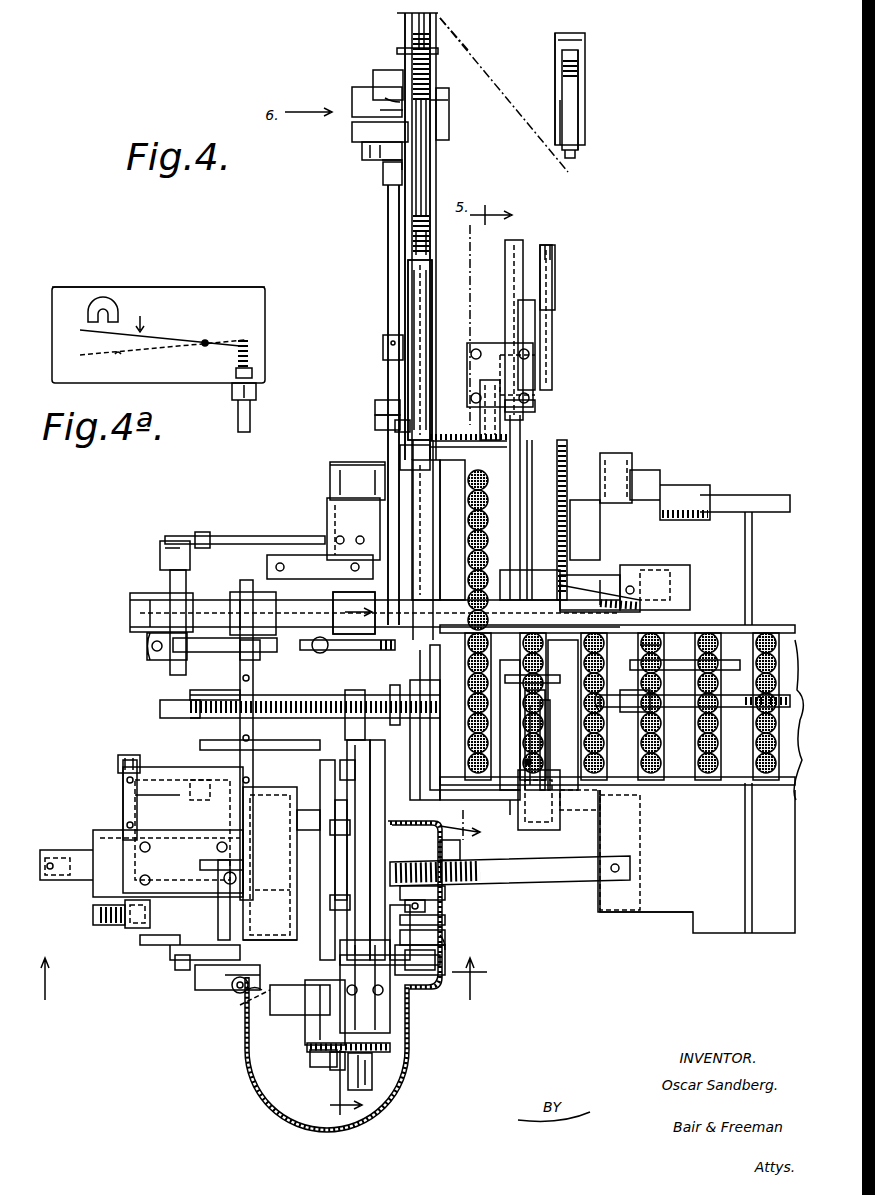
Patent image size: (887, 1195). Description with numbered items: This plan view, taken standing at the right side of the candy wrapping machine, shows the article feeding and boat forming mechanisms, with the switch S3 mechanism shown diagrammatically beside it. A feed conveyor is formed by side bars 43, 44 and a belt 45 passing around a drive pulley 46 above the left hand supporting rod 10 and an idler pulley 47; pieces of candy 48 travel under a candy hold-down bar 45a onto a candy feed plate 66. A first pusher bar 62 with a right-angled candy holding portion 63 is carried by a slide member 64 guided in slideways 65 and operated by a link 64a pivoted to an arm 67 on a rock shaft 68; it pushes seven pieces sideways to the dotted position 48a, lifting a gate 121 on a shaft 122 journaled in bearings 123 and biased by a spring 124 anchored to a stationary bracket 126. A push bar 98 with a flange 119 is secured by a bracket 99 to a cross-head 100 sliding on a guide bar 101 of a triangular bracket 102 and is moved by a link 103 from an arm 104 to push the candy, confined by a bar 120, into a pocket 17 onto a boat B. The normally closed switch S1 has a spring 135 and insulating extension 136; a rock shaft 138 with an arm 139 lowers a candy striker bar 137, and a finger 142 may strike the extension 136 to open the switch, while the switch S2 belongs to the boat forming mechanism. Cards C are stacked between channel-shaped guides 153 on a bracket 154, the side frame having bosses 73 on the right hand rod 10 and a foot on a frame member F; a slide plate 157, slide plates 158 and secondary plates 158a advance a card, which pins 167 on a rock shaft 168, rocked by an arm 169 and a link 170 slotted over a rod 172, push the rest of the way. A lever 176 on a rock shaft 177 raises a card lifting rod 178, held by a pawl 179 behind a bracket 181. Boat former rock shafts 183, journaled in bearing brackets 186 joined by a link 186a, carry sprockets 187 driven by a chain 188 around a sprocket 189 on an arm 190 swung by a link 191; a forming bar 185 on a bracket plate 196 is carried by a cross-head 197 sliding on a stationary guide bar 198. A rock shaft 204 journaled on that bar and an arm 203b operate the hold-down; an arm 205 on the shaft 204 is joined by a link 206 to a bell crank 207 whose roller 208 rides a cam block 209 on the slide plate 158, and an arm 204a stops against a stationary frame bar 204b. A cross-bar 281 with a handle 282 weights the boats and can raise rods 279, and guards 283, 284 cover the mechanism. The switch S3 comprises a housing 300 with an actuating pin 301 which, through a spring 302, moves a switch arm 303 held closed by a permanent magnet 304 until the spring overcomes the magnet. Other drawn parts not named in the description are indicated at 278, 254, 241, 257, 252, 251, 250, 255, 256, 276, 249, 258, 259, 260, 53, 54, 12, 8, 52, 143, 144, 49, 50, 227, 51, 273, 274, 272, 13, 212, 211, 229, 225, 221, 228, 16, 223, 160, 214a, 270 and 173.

In FIG. 4, the switch S3 is at (410, 60).
In FIG. 4A, the switch S3 is at (227, 290).
In FIG. 4, the actuating pin 301 is at (455, 48).
In FIG. 4A, the actuating pin 301 is at (255, 418).
In FIG. 4, the block 278 is at (385, 72).
In FIG. 4, the bracket 254 is at (388, 100).
In FIG. 4, the bell crank 207 is at (352, 100).
In FIG. 4, the rod 241 is at (385, 112).
In FIG. 4, the block 257 is at (404, 132).
In FIG. 4, the nut 252 is at (362, 152).
In FIG. 4, the collar 251 is at (382, 168).
In FIG. 4, the coupling 250 is at (382, 184).
In FIG. 4, the side bar 43 is at (392, 206).
In FIG. 4, the guide 255 is at (440, 95).
In FIG. 4, the sleeve 256 is at (430, 110).
In FIG. 4, the spring 276 is at (430, 158).
In FIG. 4, the side bar 44 is at (436, 185).
In FIG. 4, the belt 45 is at (440, 195).
In FIG. 4, the idler pulley 47 is at (575, 66).
In FIG. 4, the pieces of candy 48 is at (432, 240).
In FIG. 4, the rod 249 is at (390, 287).
In FIG. 4, the candy hold-down bar 45a is at (415, 340).
In FIG. 4, the clamp 258 is at (384, 352).
In FIG. 4, the arm 104 is at (545, 250).
In FIG. 4, the triangular shaped bracket 102 is at (510, 287).
In FIG. 4, the cross-head 100 is at (535, 310).
In FIG. 4, the link 103 is at (552, 330).
In FIG. 4, the push bar 98 is at (488, 343).
In FIG. 4, the spring 124 is at (470, 395).
In FIG. 4, the stationary bracket 126 is at (472, 410).
In FIG. 4, the clamp 259 is at (385, 394).
In FIG. 4, the clamp 260 is at (385, 409).
In FIG. 4, the bearings 123 is at (400, 425).
In FIG. 4, the candy holding portion 63 is at (435, 437).
In FIG. 4, the bracket 99 is at (535, 408).
In FIG. 4, the guide bar 101 is at (525, 420).
In FIG. 4, the flange 119 is at (505, 445).
In FIG. 4, the block 53 is at (600, 455).
In FIG. 4, the shaft 54 is at (605, 452).
In FIG. 4, the candy feed plate 66 is at (395, 500).
In FIG. 4, the slideways 65 is at (370, 478).
In FIG. 4, the shaft 122 is at (405, 478).
In FIG. 4, the dotted-line candy position 48a is at (565, 465).
In FIG. 4, the bar 120 is at (505, 500).
In FIG. 4, the gate 121 is at (495, 518).
In FIG. 4, the first pusher bar 62 is at (428, 490).
In FIG. 4, the link 64a is at (255, 538).
In FIG. 4, the slide member 64 is at (330, 516).
In FIG. 4, the arm 67 is at (168, 554).
In FIG. 4, the section line 12 is at (250, 590).
In FIG. 4, the switch S2 is at (262, 600).
In FIG. 4, the section line 8 is at (340, 590).
In FIG. 4, the block 52 is at (565, 550).
In FIG. 4, the plate 143 is at (595, 575).
In FIG. 4, the frame members F is at (616, 543).
In FIG. 4, the supporting rod 10 is at (588, 580).
In FIG. 4, the rock shaft 138 is at (630, 570).
In FIG. 4, the slide 144 is at (520, 575).
In FIG. 4, the arm 49 is at (580, 585).
In FIG. 4, the guide 50 is at (458, 600).
In FIG. 4, the arm 227 is at (240, 648).
In FIG. 4, the drive pulley 46 is at (418, 640).
In FIG. 4, the rods 279 is at (420, 655).
In FIG. 4, the boat B is at (465, 650).
In FIG. 4, the candy striker bar 137 is at (518, 680).
In FIG. 4, the bar 51 is at (548, 670).
In FIG. 4, the shaft 273 is at (655, 690).
In FIG. 4, the shaft 274 is at (640, 706).
In FIG. 4, the plate 272 is at (792, 770).
In FIG. 4, the pocket 17 is at (390, 692).
In FIG. 4, the shaft 13 is at (335, 716).
In FIG. 4, the handle 282 is at (430, 720).
In FIG. 4, the rod 212 is at (440, 760).
In FIG. 4, the rod 211 is at (430, 780).
In FIG. 4, the roller 229 is at (322, 653).
In FIG. 4, the pin 225 is at (250, 645).
In FIG. 4, the post 221 is at (245, 665).
In FIG. 4, the link 228 is at (215, 670).
In FIG. 4, the rock shaft 68 is at (170, 668).
In FIG. 4, the shaft 16 is at (230, 720).
In FIG. 4, the plate 223 is at (295, 725).
In FIG. 4, the arm 169 is at (345, 770).
In FIG. 4, the link 170 is at (135, 765).
In FIG. 4, the bracket 154 is at (175, 765).
In FIG. 4, the bosses 73 is at (205, 785).
In FIG. 4, the channel-shaped guides 153 is at (240, 785).
In FIG. 4, the rod 172 is at (123, 782).
In FIG. 4, the slide plate 157 is at (105, 830).
In FIG. 4, the arm 160 is at (60, 850).
In FIG. 4, the secondary plates 158a is at (215, 885).
In FIG. 4, the slide plates 158 is at (125, 850).
In FIG. 4, the card lifting rod 178 is at (295, 820).
In FIG. 4, the pins 167 is at (320, 830).
In FIG. 4, the rock shaft 168 is at (340, 865).
In FIG. 4, the bracket plate 196 is at (347, 880).
In FIG. 4, the forming bar 185 is at (372, 800).
In FIG. 4, the spring 135 is at (526, 762).
In FIG. 4, the arm 139 is at (548, 762).
In FIG. 4, the insulating extension 136 is at (548, 772).
In FIG. 4, the cross-bar 281 is at (460, 790).
In FIG. 4, the finger 142 is at (540, 780).
In FIG. 4, the arm 214a is at (440, 818).
In FIG. 4, the arm 203b is at (455, 838).
In FIG. 4, the switch S1 is at (520, 850).
In FIG. 4, the stationary frame bar 204b is at (455, 860).
In FIG. 4, the rock shaft 177 is at (222, 880).
In FIG. 4, the cards C is at (270, 887).
In FIG. 4, the cam block 209 is at (93, 912).
In FIG. 4, the roller 208 is at (128, 920).
In FIG. 4, the link 206 is at (297, 930).
In FIG. 4, the boat former rock shafts 183 is at (335, 945).
In FIG. 4, the cross-head 197 is at (410, 890).
In FIG. 4, the stationary guide bar 198 is at (420, 906).
In FIG. 4, the guard 283 is at (420, 920).
In FIG. 4, the arm 204a is at (470, 915).
In FIG. 4, the rock shaft 204 is at (430, 934).
In FIG. 4, the arm 205 is at (450, 940).
In FIG. 4, the plate 270 is at (685, 880).
In FIG. 4, the bracket 181 is at (225, 970).
In FIG. 4, the pawl 179 is at (225, 988).
In FIG. 4, the lever 176 is at (262, 995).
In FIG. 4, the link 191 is at (262, 1005).
In FIG. 4, the arm 190 is at (300, 1000).
In FIG. 4, the post 173 is at (320, 1010).
In FIG. 4, the link 186a is at (392, 988).
In FIG. 4, the bearing brackets 186 is at (380, 1010).
In FIG. 4, the sprockets 187 is at (390, 1045).
In FIG. 4, the guard 284 is at (405, 1060).
In FIG. 4, the sprocket 189 is at (310, 1056).
In FIG. 4, the chain 188 is at (335, 1068).
In FIG. 4A, the housing 300 is at (265, 290).
In FIG. 4A, the permanent magnet 304 is at (105, 300).
In FIG. 4A, the switch arm 303 is at (160, 338).
In FIG. 4A, the spring 302 is at (255, 350).